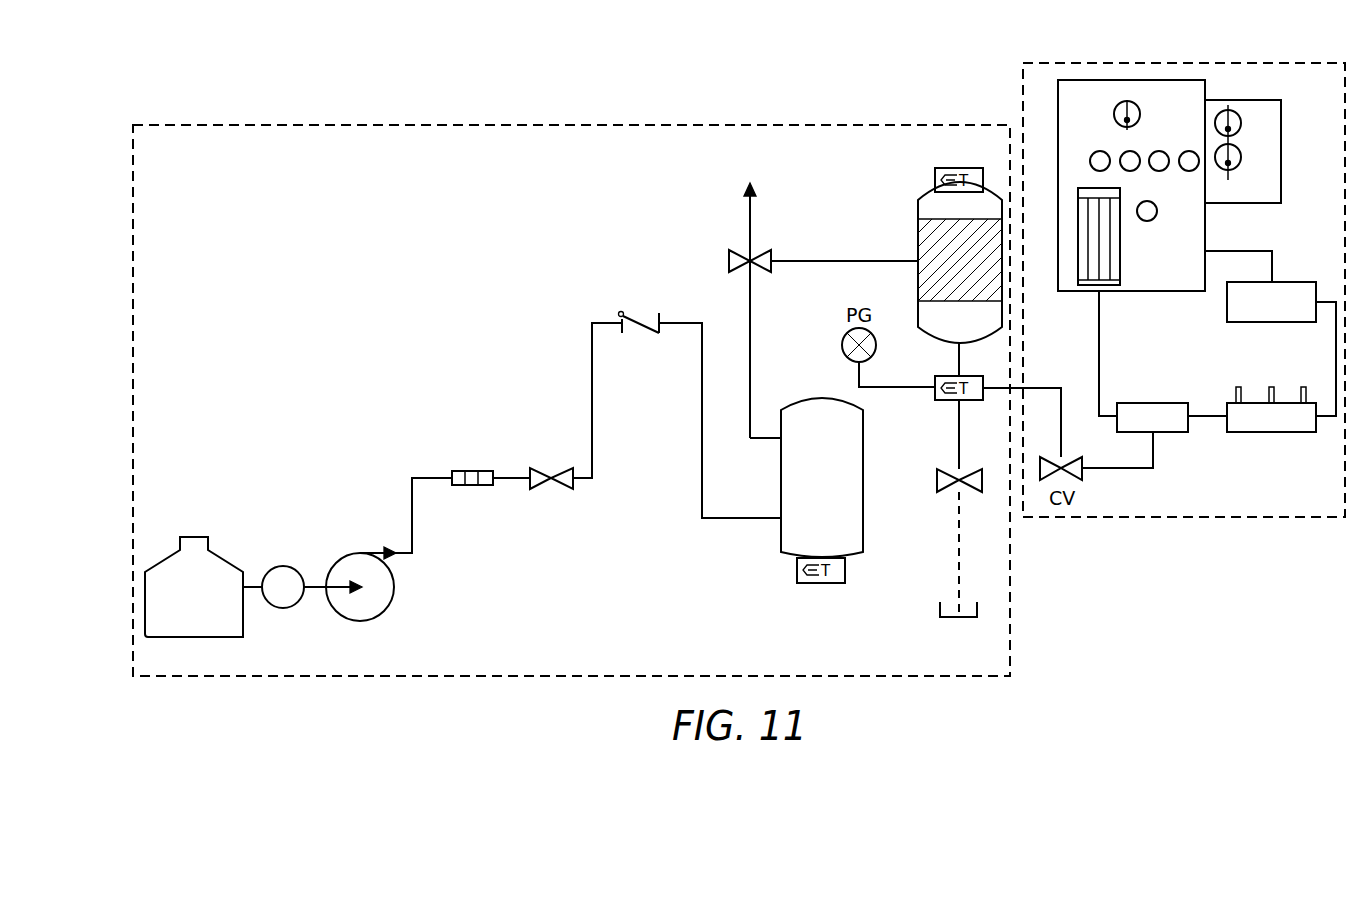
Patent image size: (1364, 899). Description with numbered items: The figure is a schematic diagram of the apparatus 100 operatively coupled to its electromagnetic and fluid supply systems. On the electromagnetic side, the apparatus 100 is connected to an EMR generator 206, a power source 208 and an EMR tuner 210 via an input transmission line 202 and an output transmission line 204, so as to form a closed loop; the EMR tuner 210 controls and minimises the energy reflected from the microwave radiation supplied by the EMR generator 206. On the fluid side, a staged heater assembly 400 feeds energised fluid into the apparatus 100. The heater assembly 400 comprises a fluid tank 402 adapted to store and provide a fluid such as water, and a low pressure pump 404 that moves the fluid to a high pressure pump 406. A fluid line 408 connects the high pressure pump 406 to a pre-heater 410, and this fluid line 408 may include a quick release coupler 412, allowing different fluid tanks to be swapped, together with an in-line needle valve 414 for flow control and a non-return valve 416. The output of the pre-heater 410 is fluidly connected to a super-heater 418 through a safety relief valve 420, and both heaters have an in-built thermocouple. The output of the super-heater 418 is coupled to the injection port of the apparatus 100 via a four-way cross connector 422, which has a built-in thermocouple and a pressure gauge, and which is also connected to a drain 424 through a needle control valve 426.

The staged heater assembly 400 is at (165, 123).
The fluid tank 402 is at (196, 537).
The low pressure pump 404 is at (283, 566).
The high pressure pump 406 is at (360, 553).
The fluid line 408 is at (412, 485).
The pre-heater 410 is at (781, 540).
The quick release coupler 412 is at (472, 471).
The in-line needle valve 414 is at (545, 468).
The non-return valve 416 is at (645, 313).
The super-heater 418 is at (928, 203).
The safety relief valve 420 is at (771, 252).
The four-way cross connector 422 is at (947, 403).
The drain 424 is at (940, 607).
The needle control valve 426 is at (948, 492).
The power source 208 is at (1084, 78).
The input transmission line 202 is at (1099, 327).
The apparatus 100 is at (1152, 403).
The EMR generator 206 is at (1272, 325).
The output transmission line 204 is at (1207, 416).
The EMR tuner 210 is at (1272, 432).